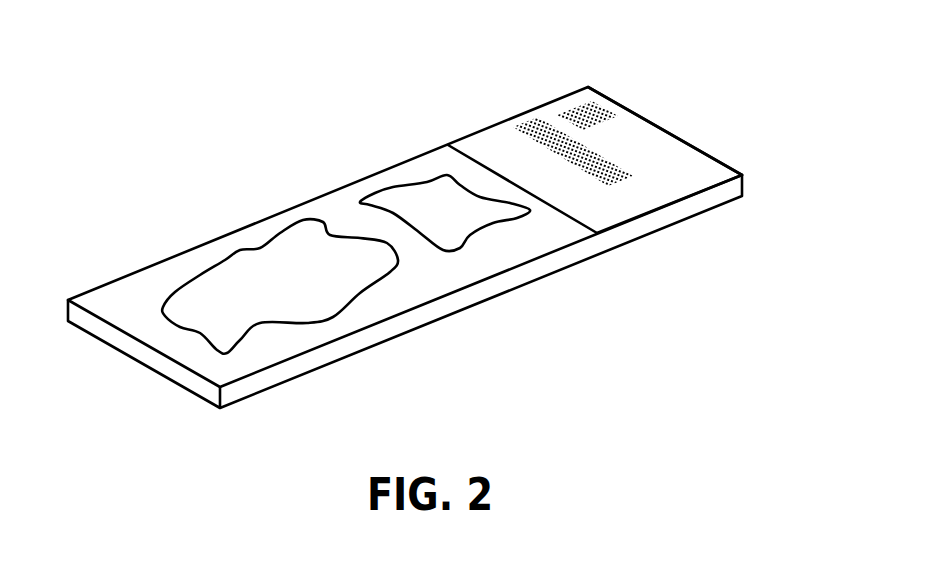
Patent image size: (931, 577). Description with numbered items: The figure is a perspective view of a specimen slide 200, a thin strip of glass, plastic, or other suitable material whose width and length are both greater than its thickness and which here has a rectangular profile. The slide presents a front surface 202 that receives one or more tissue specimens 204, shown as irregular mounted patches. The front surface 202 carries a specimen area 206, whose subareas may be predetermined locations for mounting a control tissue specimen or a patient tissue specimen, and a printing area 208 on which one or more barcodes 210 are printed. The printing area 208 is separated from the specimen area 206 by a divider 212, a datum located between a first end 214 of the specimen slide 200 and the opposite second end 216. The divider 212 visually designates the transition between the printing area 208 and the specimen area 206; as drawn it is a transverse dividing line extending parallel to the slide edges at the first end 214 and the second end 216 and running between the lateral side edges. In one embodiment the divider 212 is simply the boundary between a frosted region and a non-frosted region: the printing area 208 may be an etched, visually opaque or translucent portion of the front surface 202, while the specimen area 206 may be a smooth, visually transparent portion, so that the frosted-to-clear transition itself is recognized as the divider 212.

The specimen slide 200 is at (252, 112).
The front surface 202 is at (135, 285).
The tissue specimens 204 is at (333, 270).
The specimen area 206 is at (282, 343).
The printing area 208 is at (660, 173).
The barcodes 210 is at (577, 108).
The divider 212 is at (470, 155).
The first end 214 is at (665, 128).
The second end 216 is at (135, 345).